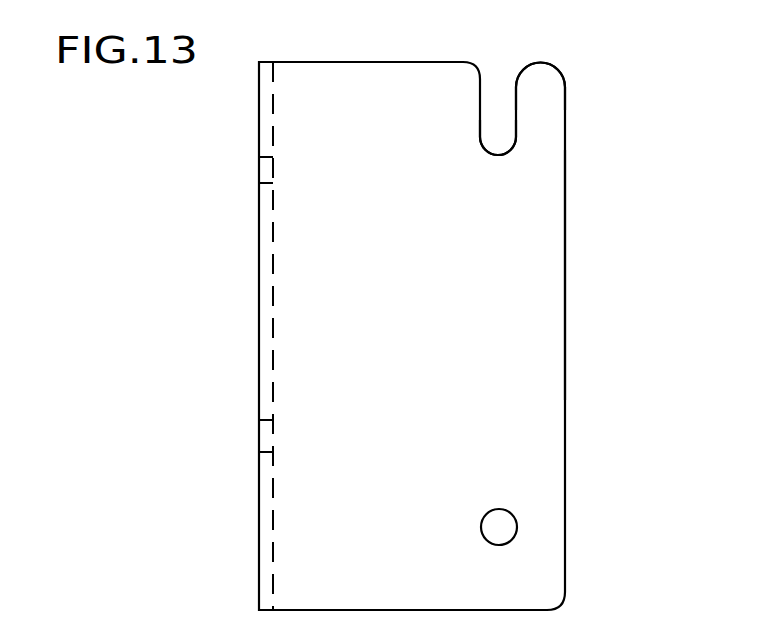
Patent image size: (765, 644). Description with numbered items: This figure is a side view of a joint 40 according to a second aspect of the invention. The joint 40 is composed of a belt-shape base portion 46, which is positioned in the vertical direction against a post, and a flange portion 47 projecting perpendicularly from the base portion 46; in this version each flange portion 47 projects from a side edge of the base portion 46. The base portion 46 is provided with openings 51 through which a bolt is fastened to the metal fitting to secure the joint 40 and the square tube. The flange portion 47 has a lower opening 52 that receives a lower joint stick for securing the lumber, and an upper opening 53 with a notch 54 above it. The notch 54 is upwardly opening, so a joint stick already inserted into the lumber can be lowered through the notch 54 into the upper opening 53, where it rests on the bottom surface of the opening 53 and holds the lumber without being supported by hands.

The joint 40 is at (178, 241).
The base portion 46 is at (262, 313).
The flange portion 47 is at (518, 270).
The opening 51 is at (260, 165).
The lower opening 52 is at (505, 527).
The upper opening 53 is at (498, 152).
The notch 54 is at (500, 87).